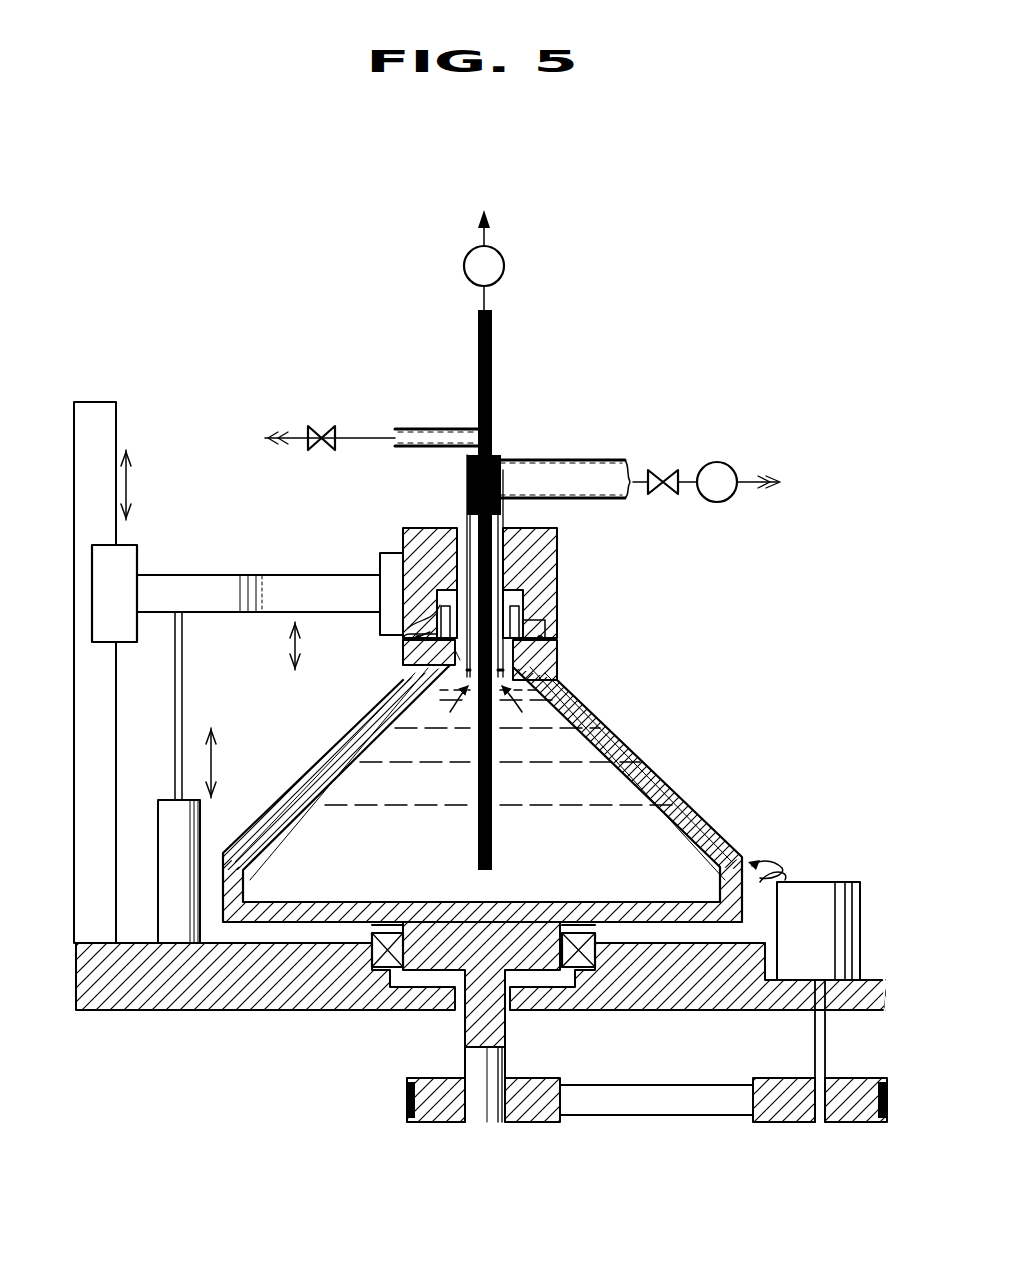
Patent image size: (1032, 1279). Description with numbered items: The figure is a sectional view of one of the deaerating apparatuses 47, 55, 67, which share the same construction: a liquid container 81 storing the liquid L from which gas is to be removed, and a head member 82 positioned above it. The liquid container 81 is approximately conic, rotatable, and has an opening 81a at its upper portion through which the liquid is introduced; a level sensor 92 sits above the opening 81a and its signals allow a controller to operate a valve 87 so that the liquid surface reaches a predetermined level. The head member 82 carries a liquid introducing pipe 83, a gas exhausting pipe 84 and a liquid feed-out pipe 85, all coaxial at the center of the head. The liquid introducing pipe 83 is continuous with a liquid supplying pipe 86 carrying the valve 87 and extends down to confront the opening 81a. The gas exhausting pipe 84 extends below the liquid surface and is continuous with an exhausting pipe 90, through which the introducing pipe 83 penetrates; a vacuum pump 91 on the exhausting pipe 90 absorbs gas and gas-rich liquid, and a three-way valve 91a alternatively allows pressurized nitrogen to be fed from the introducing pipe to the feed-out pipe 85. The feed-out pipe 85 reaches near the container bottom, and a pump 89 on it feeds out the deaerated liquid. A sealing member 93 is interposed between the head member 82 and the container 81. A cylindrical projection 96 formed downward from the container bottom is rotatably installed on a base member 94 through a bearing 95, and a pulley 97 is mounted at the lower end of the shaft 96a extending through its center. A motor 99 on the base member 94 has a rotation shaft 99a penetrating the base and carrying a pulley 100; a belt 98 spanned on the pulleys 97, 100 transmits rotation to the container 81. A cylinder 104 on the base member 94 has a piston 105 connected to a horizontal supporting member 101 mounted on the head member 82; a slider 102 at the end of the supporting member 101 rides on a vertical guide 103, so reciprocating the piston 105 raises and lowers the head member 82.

The deaerating apparatus 47 is at (498, 698).
The deaerating apparatus 55 is at (498, 698).
The deaerating apparatus 67 is at (705, 305).
The head member 82 is at (655, 415).
The liquid container 81 is at (706, 826).
The opening 81a is at (446, 641).
The liquid introducing pipe 83 is at (500, 428).
The gas exhausting pipe 84 is at (508, 520).
The liquid feed-out pipe 85 is at (493, 372).
The liquid supplying pipe 86 is at (362, 430).
The valve 87 is at (318, 426).
The pump 89 is at (503, 262).
The exhausting pipe 90 is at (588, 460).
The vacuum pump 91 is at (730, 462).
The three-way valve 91a is at (664, 496).
The level sensor 92 is at (466, 510).
The sealing member 93 is at (548, 637).
The base member 94 is at (216, 1010).
The bearing 95 is at (382, 934).
The cylindrical projection 96 is at (538, 927).
The hollow shaft of boss 96a is at (465, 1045).
The pulley 97 is at (444, 1123).
The belt 98 is at (656, 1118).
The motor 99 is at (835, 882).
The rotation shaft 99a is at (826, 1040).
The pulley 100 is at (840, 1123).
The supporting member 101 is at (278, 588).
The slider 102 is at (137, 552).
The guide 103 is at (118, 410).
The cylinder 104 is at (196, 825).
The piston 105 is at (183, 680).
The liquid L is at (610, 798).